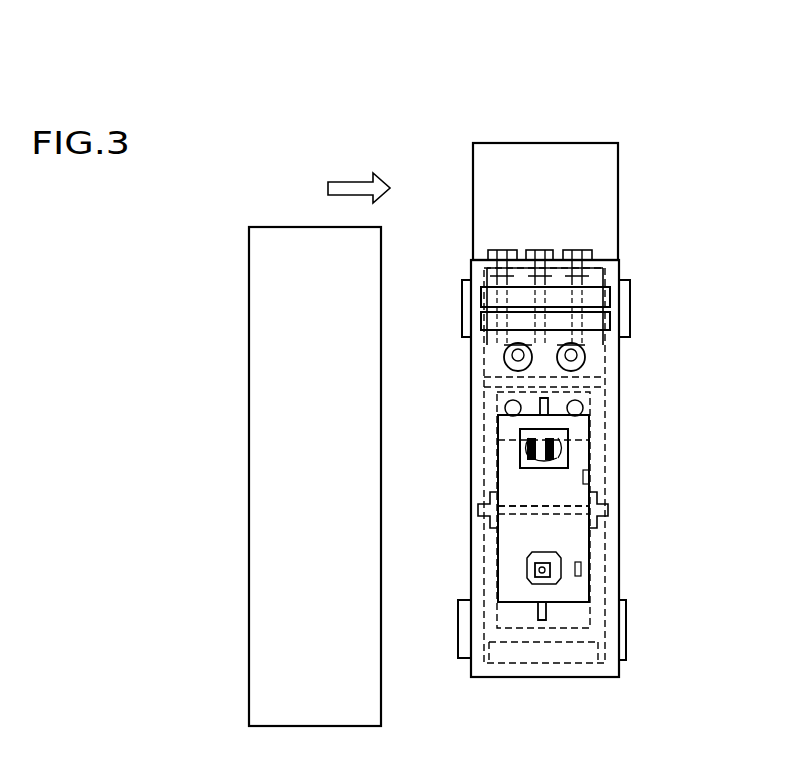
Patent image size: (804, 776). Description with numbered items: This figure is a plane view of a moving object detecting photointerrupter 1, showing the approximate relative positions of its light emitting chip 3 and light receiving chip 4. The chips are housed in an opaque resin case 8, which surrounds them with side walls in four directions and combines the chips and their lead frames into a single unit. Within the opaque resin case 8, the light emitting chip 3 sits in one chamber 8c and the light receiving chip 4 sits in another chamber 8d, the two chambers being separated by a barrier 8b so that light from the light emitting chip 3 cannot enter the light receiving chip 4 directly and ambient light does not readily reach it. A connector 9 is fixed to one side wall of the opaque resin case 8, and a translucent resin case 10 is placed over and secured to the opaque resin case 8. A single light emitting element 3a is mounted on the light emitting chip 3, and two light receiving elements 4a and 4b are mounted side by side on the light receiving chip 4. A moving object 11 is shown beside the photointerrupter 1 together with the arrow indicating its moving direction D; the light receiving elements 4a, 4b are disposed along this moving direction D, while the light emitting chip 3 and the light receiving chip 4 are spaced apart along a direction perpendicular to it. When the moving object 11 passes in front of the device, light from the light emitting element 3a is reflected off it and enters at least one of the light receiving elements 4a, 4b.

The moving object detecting photointerrupter 1 is at (566, 366).
The light emitting chip 3 is at (533, 570).
The light emitting element 3a is at (540, 578).
The light receiving chip 4 is at (567, 443).
The light receiving element 4a is at (530, 444).
The light receiving element 4b is at (553, 451).
The opaque resin case 8 is at (602, 387).
The barrier 8b is at (563, 508).
The chamber 8c is at (578, 569).
The chamber 8d is at (583, 477).
The connector 9 is at (542, 157).
The translucent resin case 10 is at (613, 668).
The moving object 11 is at (250, 227).
The moving direction D is at (352, 182).